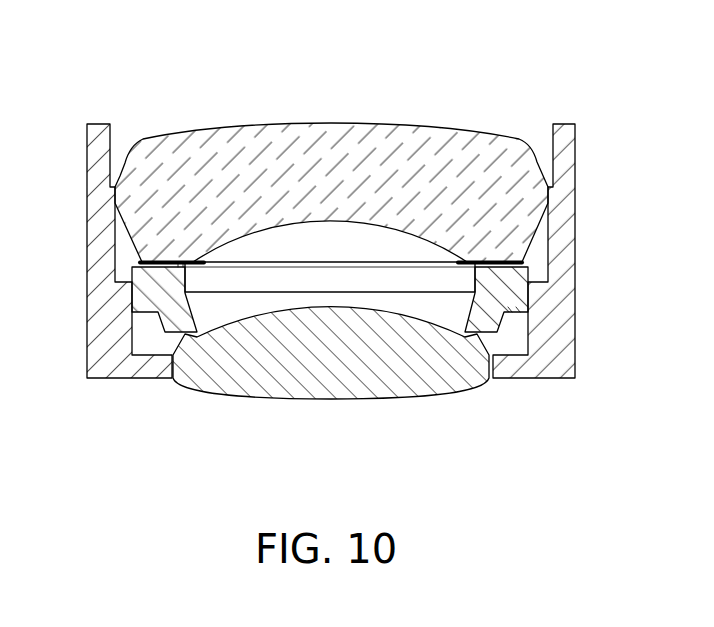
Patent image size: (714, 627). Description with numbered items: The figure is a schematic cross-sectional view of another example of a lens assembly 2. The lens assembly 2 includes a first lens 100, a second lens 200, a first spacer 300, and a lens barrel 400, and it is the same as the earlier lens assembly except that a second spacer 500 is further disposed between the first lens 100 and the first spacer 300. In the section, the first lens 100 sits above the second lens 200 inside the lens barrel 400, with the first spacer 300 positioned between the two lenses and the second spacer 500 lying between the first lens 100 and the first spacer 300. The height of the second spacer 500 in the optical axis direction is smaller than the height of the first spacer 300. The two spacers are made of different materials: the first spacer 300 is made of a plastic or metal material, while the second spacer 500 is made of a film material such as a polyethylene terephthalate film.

The lens assembly 2 is at (569, 24).
The first lens 100 is at (130, 170).
The second lens 200 is at (233, 378).
The first spacer 300 is at (518, 290).
The lens barrel 400 is at (558, 353).
The second spacer 500 is at (491, 254).